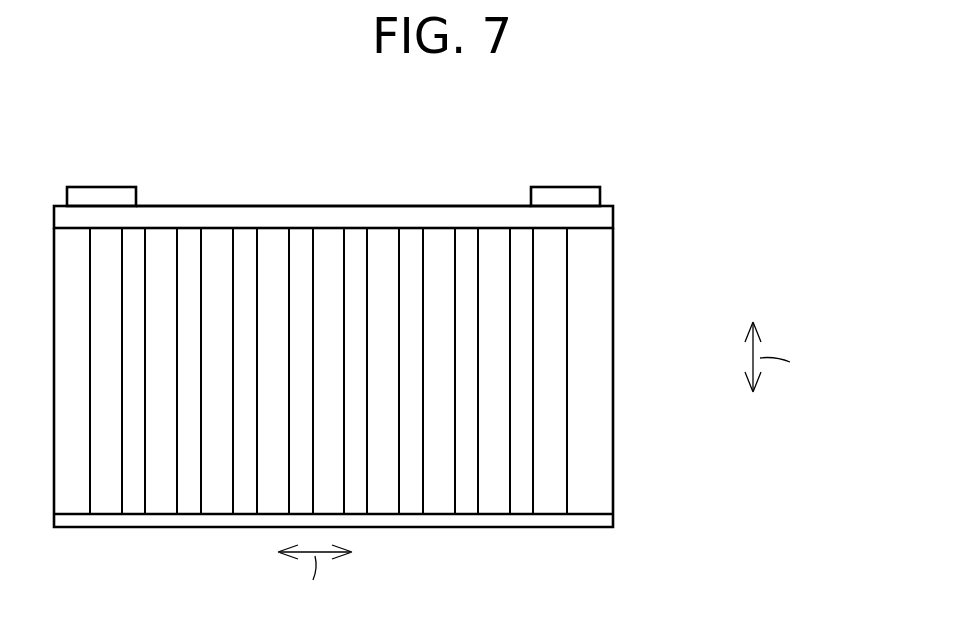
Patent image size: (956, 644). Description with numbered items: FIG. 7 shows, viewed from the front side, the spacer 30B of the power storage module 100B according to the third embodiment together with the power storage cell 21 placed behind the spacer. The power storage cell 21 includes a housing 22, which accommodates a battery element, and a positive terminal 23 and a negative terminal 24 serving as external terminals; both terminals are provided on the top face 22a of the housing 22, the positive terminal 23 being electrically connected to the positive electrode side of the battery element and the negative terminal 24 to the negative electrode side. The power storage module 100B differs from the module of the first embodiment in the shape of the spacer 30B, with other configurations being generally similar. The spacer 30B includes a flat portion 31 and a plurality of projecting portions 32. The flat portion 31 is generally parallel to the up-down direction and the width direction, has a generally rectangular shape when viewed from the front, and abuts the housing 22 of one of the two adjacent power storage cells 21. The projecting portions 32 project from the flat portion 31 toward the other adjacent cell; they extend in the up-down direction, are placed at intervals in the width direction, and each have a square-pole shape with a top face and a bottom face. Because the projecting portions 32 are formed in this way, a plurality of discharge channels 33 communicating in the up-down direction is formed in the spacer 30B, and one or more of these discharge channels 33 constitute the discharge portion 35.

The power storage module 100B is at (624, 183).
The power storage cell 21 is at (165, 193).
The housing 22 is at (614, 212).
The top face 22a is at (490, 205).
The positive terminal 23 is at (562, 187).
The negative terminal 24 is at (98, 187).
The spacer 30B is at (613, 368).
The flat portion 31 is at (597, 270).
The projecting portions 32 is at (275, 250).
The discharge channels 33 is at (243, 248).
The discharge portion 35 is at (328, 308).